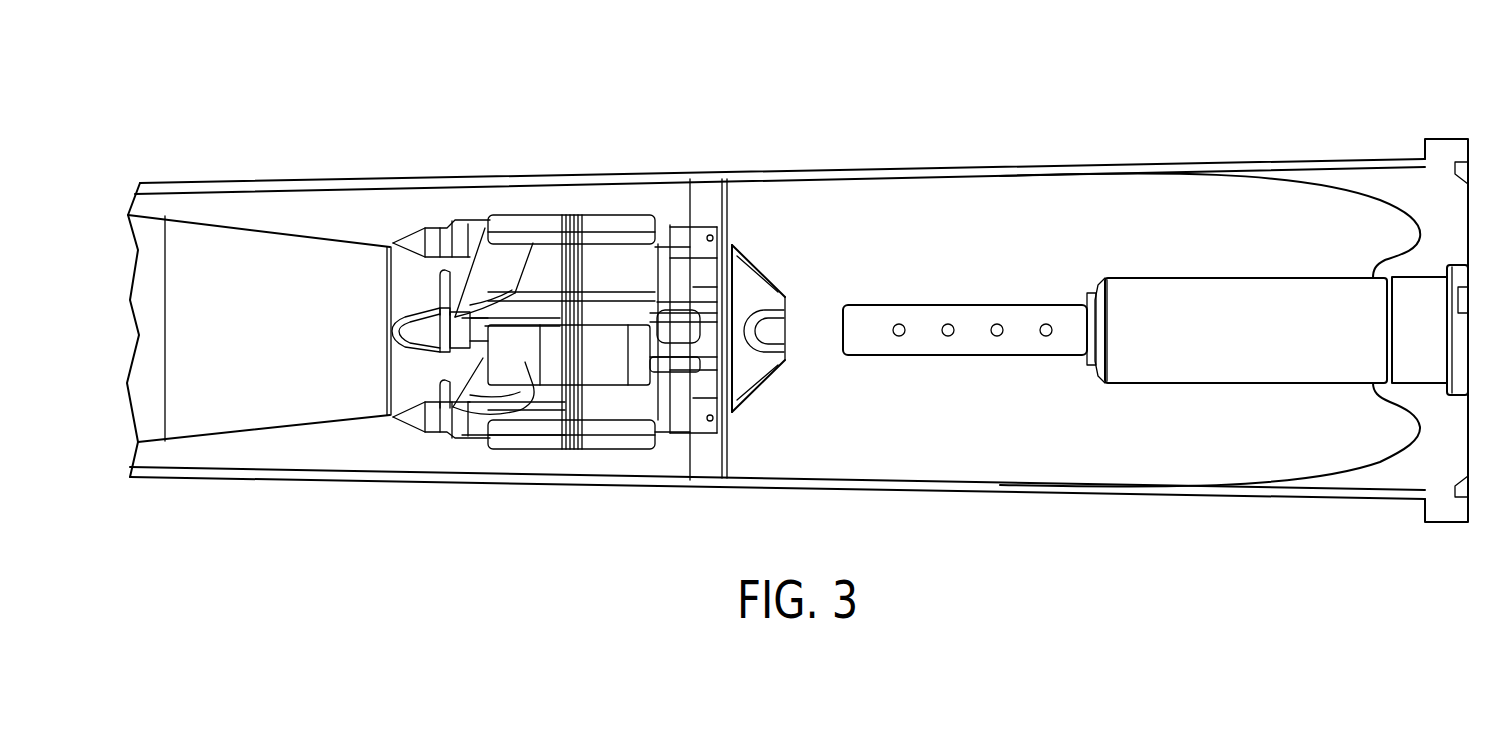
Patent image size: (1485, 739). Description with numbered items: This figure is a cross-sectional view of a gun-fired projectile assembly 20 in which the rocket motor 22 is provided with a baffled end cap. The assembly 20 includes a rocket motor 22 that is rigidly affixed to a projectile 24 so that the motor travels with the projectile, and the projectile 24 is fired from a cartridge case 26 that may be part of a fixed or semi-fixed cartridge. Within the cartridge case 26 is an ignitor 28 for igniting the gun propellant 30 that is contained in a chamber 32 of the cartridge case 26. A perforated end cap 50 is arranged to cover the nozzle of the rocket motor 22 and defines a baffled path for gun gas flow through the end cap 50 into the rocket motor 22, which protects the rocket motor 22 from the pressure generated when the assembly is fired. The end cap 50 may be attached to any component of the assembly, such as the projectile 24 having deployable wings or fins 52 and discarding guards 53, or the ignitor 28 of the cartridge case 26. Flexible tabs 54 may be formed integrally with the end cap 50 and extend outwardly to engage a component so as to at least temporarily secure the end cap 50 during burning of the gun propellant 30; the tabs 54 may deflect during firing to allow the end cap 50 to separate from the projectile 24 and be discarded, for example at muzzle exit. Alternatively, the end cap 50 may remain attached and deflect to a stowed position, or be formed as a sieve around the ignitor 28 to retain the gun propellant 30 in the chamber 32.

The gun-fired projectile assembly 20 is at (254, 141).
The rocket motor 22 is at (147, 408).
The projectile 24 is at (566, 311).
The cartridge case 26 is at (1218, 162).
The ignitor 28 is at (1235, 340).
The gun propellant 30 is at (978, 323).
The chamber 32 is at (1380, 185).
The perforated end cap 50 is at (755, 290).
The deployable wings or fins 52 is at (500, 266).
The discarding guards 53 is at (605, 227).
The flexible tabs 54 is at (690, 272).